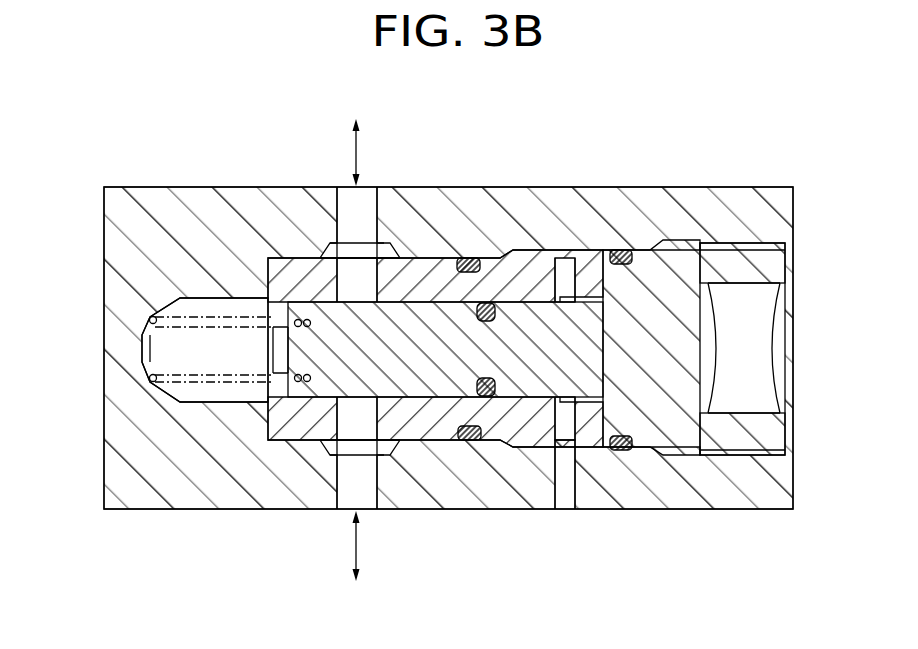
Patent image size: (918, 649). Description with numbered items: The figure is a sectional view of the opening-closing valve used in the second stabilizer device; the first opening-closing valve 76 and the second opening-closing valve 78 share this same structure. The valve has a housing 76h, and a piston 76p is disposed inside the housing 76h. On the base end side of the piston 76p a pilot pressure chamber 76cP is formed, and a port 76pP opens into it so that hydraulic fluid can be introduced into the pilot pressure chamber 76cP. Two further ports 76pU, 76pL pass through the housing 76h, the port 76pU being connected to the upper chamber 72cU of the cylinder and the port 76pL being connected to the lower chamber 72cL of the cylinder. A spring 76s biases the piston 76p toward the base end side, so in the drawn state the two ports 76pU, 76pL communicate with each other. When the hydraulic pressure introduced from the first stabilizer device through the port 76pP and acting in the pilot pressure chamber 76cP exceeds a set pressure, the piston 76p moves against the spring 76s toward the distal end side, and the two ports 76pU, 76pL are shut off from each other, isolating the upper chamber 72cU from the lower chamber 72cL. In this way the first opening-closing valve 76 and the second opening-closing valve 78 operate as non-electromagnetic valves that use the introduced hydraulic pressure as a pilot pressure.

The first opening-closing valve 76 is at (760, 114).
The second opening-closing valve 78 is at (448, 348).
The housing 76h is at (695, 488).
The piston 76p is at (522, 322).
The spring 76s is at (207, 395).
The pilot pressure chamber 76cP is at (593, 297).
The port 76pU is at (372, 188).
The port 76pL is at (368, 512).
The port 76pP is at (563, 516).
The upper chamber 72cU is at (365, 126).
The lower chamber 72cL is at (374, 570).